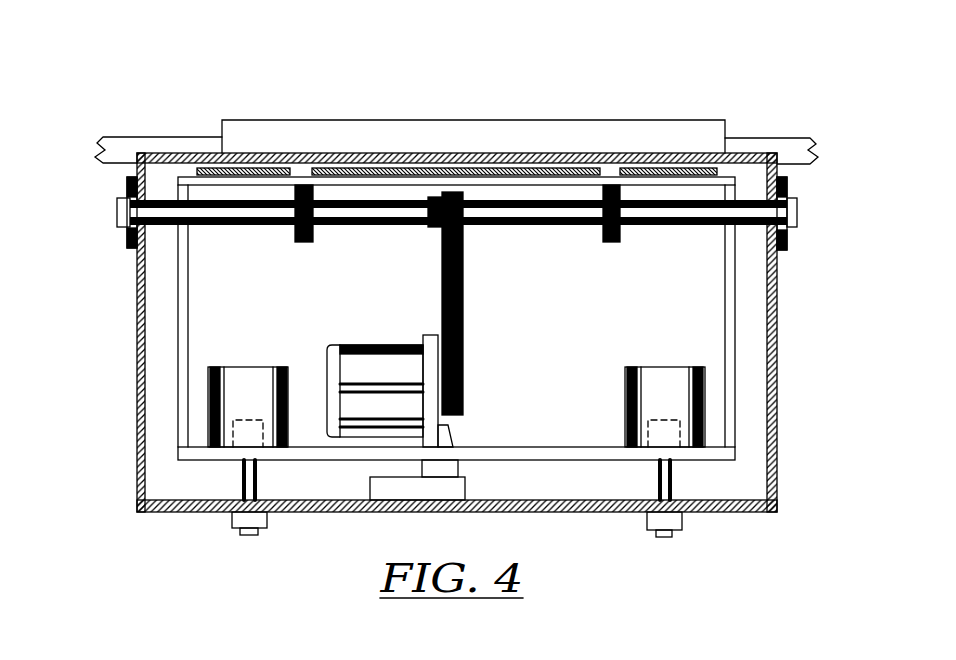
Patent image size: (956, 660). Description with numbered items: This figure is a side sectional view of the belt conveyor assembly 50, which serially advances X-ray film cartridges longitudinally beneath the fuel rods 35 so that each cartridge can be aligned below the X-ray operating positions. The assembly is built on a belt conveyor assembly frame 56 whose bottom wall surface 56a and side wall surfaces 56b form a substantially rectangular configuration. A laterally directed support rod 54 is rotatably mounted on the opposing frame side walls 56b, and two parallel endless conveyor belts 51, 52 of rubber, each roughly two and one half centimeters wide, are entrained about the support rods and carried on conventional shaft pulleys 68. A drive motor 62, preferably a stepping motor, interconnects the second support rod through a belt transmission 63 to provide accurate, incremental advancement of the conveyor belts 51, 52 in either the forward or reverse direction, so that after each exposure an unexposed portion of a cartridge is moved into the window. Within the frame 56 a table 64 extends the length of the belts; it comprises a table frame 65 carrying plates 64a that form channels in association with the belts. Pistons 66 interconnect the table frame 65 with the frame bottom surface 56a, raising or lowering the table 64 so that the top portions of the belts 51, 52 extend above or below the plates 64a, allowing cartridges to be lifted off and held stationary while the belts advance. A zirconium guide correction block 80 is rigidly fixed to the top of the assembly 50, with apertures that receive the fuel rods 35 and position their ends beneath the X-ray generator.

The rods 35 is at (308, 150).
The plates 64a is at (657, 170).
The guide correction block 80 is at (730, 137).
The belt conveyor assembly 50 is at (425, 359).
The belt conveyor assembly frame 56 is at (392, 359).
The bottom wall surface 56a is at (170, 513).
The side wall surfaces 56b is at (137, 383).
The shaft pulleys 68 is at (455, 242).
The second endless conveyor belt 52 is at (313, 242).
The first endless conveyor belt 51 is at (613, 245).
The first support rod 54 is at (410, 227).
The drive motor 62 is at (378, 358).
The belt transmission 63 is at (463, 328).
The pistons 66 is at (260, 367).
The table 64 is at (740, 292).
The table frame 65 is at (520, 318).